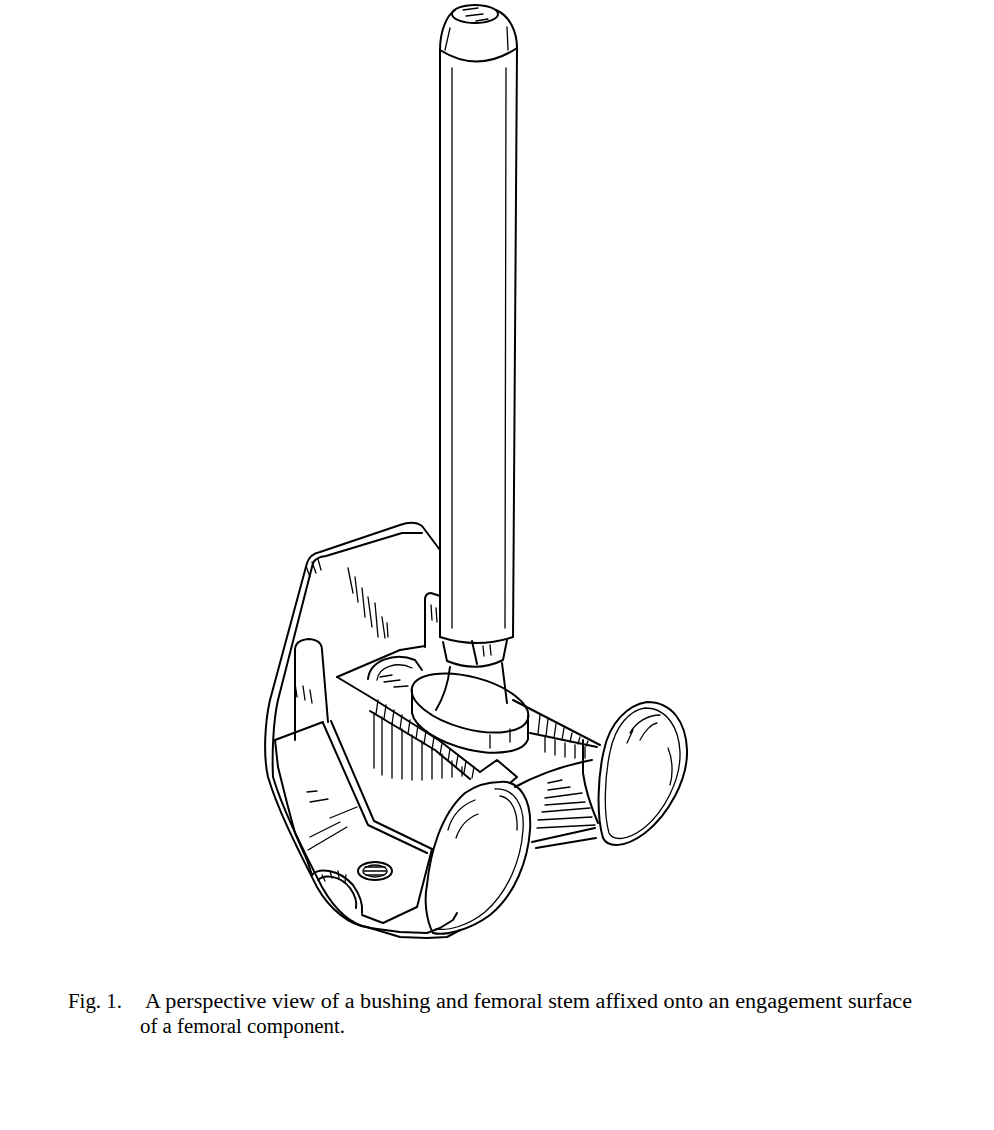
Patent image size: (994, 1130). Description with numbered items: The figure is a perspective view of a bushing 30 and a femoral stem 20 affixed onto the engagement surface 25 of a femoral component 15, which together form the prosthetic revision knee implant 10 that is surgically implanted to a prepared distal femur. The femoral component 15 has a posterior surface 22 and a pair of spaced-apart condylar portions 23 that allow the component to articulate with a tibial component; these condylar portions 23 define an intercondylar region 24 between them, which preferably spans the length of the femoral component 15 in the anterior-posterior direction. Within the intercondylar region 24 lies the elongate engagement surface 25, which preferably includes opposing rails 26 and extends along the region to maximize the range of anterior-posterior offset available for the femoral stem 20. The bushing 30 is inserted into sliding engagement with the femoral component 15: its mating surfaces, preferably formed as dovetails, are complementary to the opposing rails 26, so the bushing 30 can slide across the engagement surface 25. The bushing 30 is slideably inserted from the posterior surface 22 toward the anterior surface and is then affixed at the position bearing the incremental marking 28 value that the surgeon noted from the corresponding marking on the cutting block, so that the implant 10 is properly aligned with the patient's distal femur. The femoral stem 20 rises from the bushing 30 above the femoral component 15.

The prosthetic revision knee implant 10 is at (243, 593).
The femoral component 15 is at (306, 768).
The femoral stem 20 is at (483, 317).
The posterior surface 22 is at (540, 803).
The condylar portions 23 is at (657, 782).
The intercondylar region 24 is at (530, 842).
The engagement surface 25 is at (425, 690).
The opposing rails 26 is at (490, 766).
The incremental markings 28 is at (375, 736).
The bushing 30 is at (516, 700).